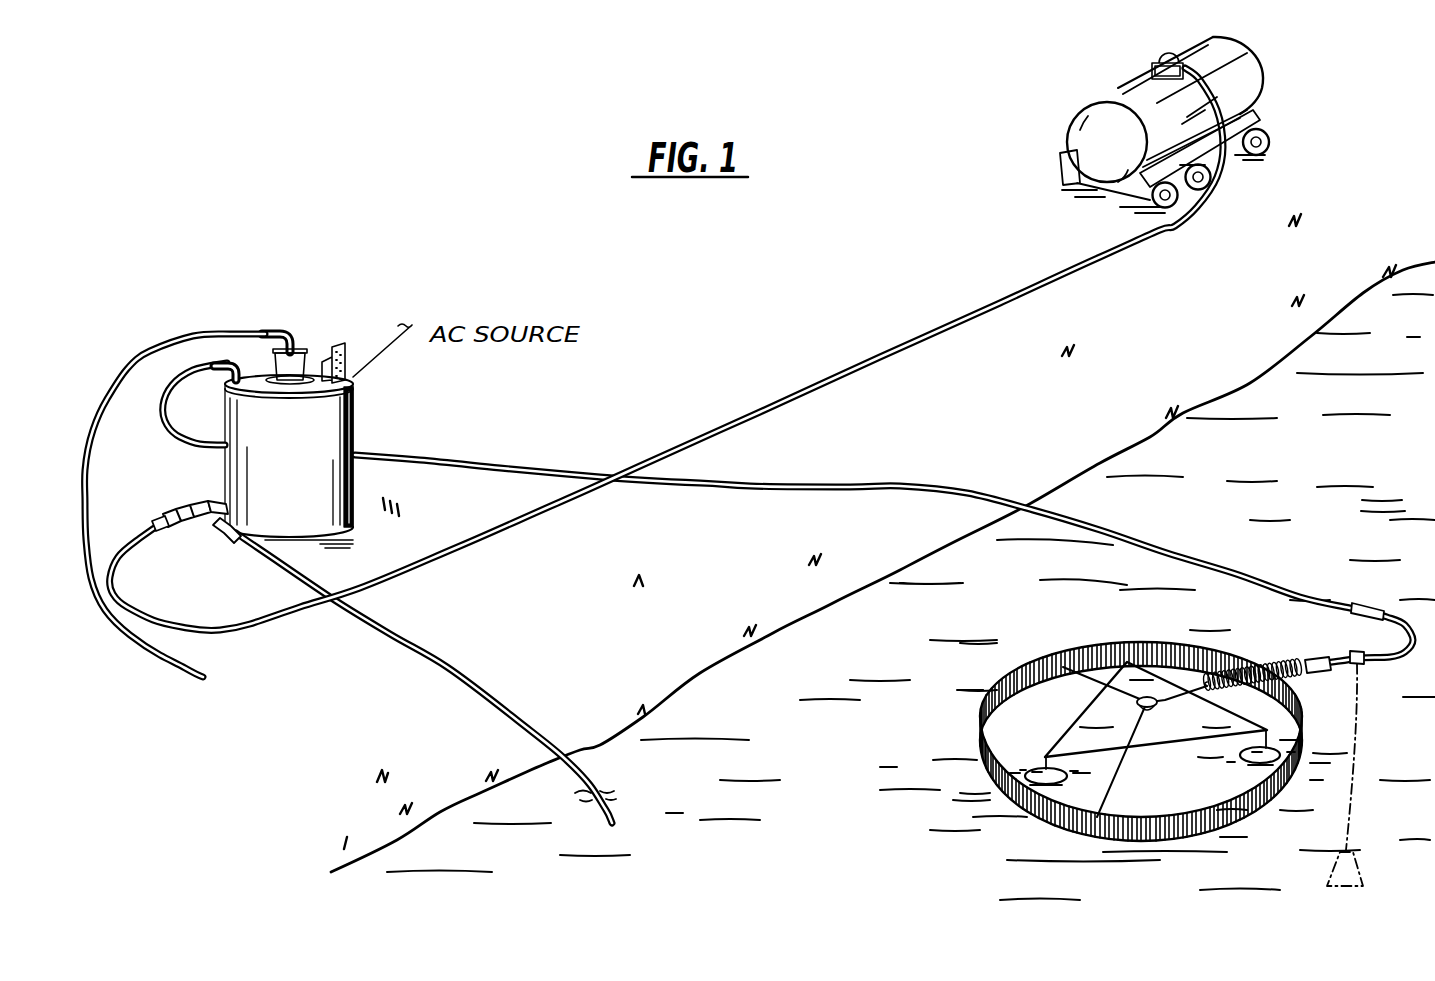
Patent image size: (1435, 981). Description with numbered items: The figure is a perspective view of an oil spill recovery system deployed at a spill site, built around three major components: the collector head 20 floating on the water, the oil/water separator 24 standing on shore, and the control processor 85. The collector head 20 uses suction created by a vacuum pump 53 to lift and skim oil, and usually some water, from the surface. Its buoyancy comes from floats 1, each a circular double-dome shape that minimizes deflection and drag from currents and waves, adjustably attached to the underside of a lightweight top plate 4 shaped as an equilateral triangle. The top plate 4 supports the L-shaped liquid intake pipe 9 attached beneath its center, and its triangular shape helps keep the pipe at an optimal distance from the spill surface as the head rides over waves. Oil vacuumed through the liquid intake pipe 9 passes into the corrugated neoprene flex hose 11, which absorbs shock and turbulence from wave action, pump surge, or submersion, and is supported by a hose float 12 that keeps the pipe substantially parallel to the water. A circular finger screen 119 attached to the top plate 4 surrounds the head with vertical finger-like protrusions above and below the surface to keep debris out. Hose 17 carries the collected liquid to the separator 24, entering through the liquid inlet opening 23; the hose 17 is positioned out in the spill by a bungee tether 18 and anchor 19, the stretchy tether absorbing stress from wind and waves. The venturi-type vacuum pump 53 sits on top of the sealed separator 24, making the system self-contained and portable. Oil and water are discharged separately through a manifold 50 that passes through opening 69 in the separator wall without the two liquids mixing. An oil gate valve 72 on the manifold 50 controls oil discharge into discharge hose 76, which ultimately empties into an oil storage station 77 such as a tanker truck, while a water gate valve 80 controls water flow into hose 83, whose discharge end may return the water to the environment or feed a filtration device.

The floats 1 is at (1038, 762).
The top plate 4 is at (1093, 727).
The liquid intake pipe 9 is at (1212, 650).
The flexible hose 11 is at (1296, 648).
The hose float 12 is at (1328, 674).
The hose 17 is at (170, 427).
The bungee tether 18 is at (1360, 745).
The anchor 19 is at (1358, 857).
The collector head 20 is at (1063, 643).
The liquid inlet opening 23 is at (199, 404).
The oil/water separator 24 is at (358, 389).
The manifold 50 is at (213, 507).
The vacuum pump 53 is at (292, 340).
The opening 69 is at (222, 504).
The oil gate valve 72 is at (185, 530).
The discharge hose 76 is at (226, 623).
The oil storage station 77 is at (1123, 88).
The water gate valve 80 is at (230, 533).
The hose 83 is at (445, 660).
The control processor 85 is at (338, 350).
The finger screen 119 is at (980, 724).